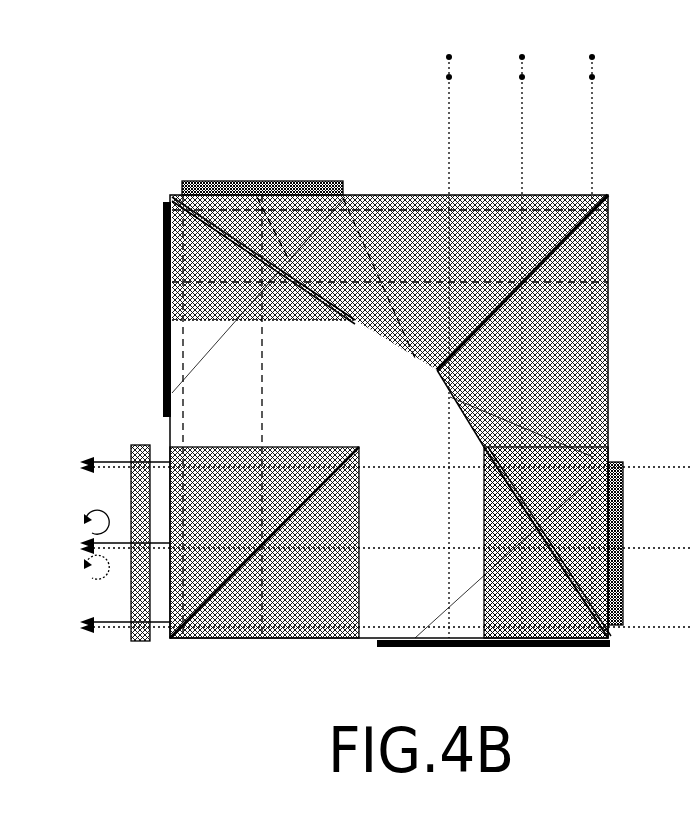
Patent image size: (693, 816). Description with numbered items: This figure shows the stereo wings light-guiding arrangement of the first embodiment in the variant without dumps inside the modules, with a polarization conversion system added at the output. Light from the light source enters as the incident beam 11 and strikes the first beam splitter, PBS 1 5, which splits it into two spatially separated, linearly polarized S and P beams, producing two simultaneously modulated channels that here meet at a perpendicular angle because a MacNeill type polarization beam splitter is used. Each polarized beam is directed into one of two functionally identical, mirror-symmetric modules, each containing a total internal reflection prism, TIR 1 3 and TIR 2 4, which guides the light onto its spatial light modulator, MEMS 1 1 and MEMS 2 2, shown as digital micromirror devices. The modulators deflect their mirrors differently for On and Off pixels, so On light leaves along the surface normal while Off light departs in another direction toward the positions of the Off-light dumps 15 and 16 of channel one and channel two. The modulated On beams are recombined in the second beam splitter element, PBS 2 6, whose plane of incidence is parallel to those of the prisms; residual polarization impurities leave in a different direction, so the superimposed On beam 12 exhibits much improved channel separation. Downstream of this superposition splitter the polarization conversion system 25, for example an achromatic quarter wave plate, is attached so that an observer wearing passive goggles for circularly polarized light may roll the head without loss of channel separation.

The MEMS 1 is at (630, 543).
The MEMS 2 is at (262, 166).
The TIR 1 3 is at (547, 542).
The TIR 2 4 is at (285, 258).
The PBS 1 5 is at (390, 416).
The PBS 2 6 is at (264, 542).
The incident beam 11 is at (520, 344).
The superimposed On beam 12 is at (359, 545).
The dump: Off-light channel 1 15 is at (493, 667).
The dump: Off-light channel 2 16 is at (143, 309).
The polarization conversion system PCS 25 is at (144, 569).